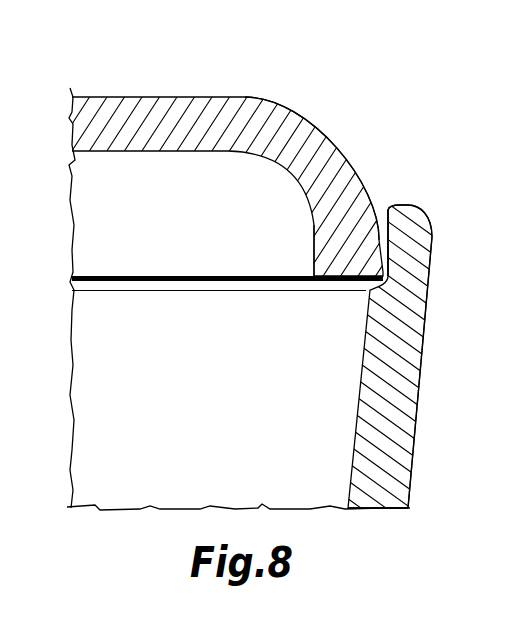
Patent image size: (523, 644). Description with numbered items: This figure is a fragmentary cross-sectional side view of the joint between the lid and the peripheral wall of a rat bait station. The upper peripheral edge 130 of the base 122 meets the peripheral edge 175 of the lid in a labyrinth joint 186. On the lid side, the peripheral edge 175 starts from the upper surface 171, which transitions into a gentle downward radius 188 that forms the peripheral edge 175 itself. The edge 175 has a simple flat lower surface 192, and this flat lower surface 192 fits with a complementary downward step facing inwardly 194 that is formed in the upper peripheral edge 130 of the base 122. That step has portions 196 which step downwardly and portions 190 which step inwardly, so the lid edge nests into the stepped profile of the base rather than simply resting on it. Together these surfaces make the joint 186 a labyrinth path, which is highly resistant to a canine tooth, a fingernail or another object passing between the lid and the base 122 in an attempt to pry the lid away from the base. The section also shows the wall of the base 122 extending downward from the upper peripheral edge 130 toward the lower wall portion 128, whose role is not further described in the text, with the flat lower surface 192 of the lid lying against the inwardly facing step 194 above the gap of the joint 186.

The upper surface 171 is at (212, 100).
The gentle downward radius 188 is at (332, 131).
The upper peripheral edge 130 is at (415, 204).
The peripheral edge 175 is at (378, 272).
The portions which step downwardly 196 is at (390, 242).
The downward step facing inwardly 194 is at (412, 290).
The portions which step inwardly 190 is at (423, 318).
The flat lower surface 192 is at (329, 282).
The labyrinth joint 186 is at (348, 294).
The base 122 is at (413, 440).
The wall bottom edge 128 is at (410, 485).